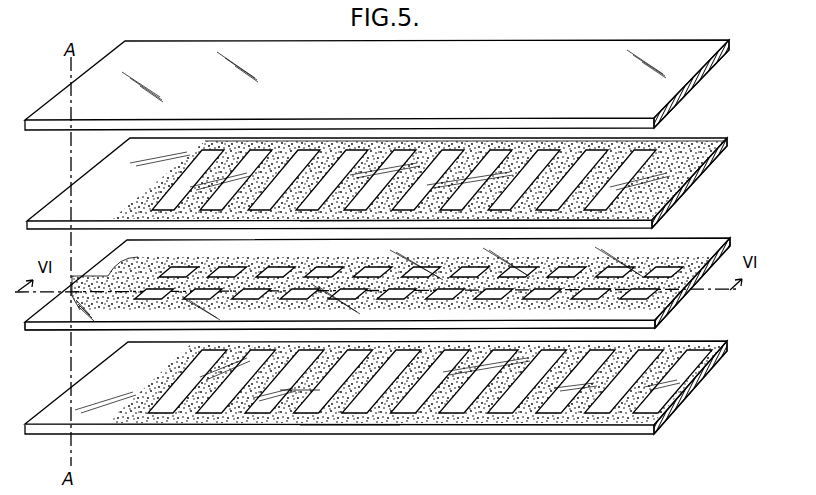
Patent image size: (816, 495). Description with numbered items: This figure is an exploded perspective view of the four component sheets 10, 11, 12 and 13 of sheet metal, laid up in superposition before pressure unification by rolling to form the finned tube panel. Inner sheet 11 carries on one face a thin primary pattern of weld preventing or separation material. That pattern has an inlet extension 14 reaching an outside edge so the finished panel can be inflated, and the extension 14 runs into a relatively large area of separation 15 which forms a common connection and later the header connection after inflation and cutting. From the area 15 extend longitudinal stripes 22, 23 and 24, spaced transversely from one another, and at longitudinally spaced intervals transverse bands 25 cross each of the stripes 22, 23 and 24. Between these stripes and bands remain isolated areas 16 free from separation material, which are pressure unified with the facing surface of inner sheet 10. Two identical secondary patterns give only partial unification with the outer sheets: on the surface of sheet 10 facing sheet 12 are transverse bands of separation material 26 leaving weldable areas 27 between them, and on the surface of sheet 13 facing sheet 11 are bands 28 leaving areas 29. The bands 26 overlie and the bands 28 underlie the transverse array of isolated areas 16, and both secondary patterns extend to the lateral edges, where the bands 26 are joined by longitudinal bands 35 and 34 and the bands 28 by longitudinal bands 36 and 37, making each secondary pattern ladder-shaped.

The component sheet 10 is at (392, 170).
The component sheet 11 is at (397, 284).
The component sheet 12 is at (713, 77).
The component sheet 13 is at (386, 400).
The inlet extension 14 is at (88, 280).
The area of separation 15 is at (128, 268).
The isolated areas 16 is at (150, 297).
The longitudinal stripe 22 is at (130, 304).
The longitudinal stripe 23 is at (220, 280).
The longitudinal stripe 24 is at (252, 266).
The transverse bands 25 is at (337, 260).
The bands of separation material 26 is at (238, 173).
The areas free from separation material 27 is at (270, 160).
The bands of separation material 28 is at (153, 389).
The areas free from separation material 29 is at (216, 374).
The longitudinally extending band of separation material 34 is at (438, 226).
The longitudinally extending band of separation material 35 is at (393, 142).
The longitudinally extending band of separation material 36 is at (345, 426).
The longitudinally extending band of separation material 37 is at (300, 388).